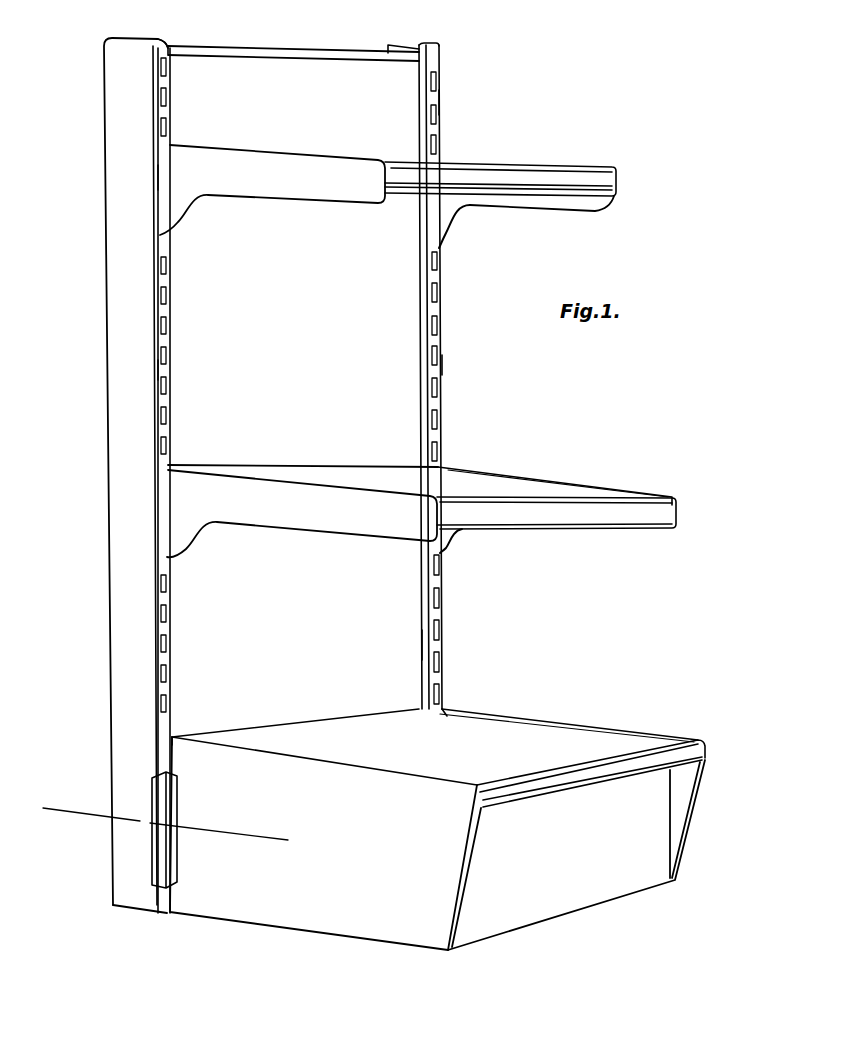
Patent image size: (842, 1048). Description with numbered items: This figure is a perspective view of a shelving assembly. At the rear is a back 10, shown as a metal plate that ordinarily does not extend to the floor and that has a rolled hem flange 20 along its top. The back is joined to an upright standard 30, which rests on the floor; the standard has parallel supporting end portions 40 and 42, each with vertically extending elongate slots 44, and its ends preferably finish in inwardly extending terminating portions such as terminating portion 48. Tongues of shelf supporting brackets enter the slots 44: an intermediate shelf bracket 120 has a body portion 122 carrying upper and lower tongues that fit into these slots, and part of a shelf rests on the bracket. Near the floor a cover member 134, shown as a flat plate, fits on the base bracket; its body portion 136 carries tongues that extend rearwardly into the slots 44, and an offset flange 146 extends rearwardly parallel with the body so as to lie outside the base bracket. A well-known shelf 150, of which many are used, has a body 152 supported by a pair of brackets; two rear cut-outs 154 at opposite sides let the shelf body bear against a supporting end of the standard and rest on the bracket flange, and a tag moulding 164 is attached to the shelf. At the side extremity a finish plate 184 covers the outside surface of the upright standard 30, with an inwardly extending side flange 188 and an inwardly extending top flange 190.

The back 10 is at (67, 848).
The rolled hem flange 20 is at (323, 50).
The upright standard 30 is at (178, 397).
The supporting end portion 40 is at (167, 372).
The supporting end portion 42 is at (441, 367).
The elongate slots 44 is at (166, 357).
The terminating portion 48 is at (427, 643).
The intermediate shelf bracket 120 is at (262, 205).
The body portion 122 is at (485, 200).
The cover member 134 is at (705, 789).
The body portion 136 is at (309, 843).
The offset flange 146 is at (158, 790).
The shelf 150 is at (435, 626).
The body 152 is at (517, 487).
The rear cut-outs 154 is at (184, 736).
The tag moulding 164 is at (567, 183).
The finish plate 184 is at (115, 403).
The flange 188 is at (160, 175).
The flange 190 is at (133, 40).